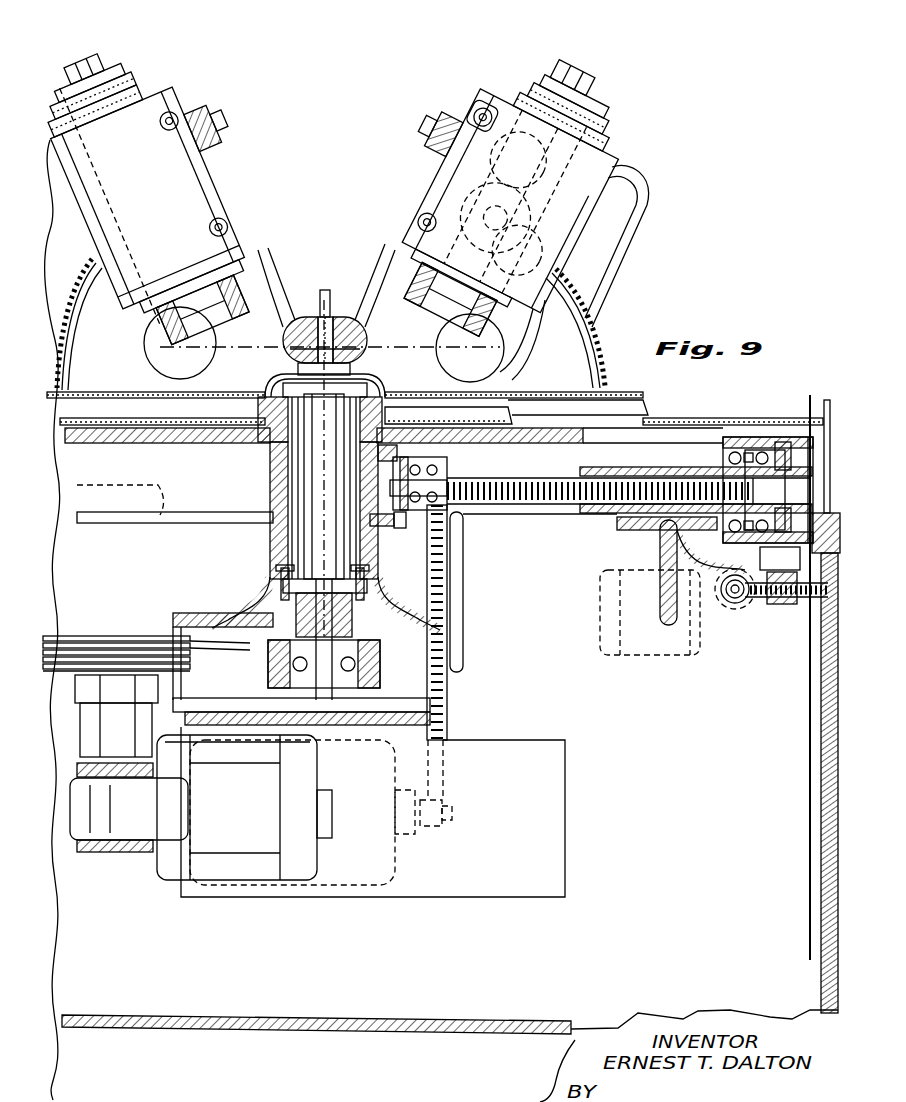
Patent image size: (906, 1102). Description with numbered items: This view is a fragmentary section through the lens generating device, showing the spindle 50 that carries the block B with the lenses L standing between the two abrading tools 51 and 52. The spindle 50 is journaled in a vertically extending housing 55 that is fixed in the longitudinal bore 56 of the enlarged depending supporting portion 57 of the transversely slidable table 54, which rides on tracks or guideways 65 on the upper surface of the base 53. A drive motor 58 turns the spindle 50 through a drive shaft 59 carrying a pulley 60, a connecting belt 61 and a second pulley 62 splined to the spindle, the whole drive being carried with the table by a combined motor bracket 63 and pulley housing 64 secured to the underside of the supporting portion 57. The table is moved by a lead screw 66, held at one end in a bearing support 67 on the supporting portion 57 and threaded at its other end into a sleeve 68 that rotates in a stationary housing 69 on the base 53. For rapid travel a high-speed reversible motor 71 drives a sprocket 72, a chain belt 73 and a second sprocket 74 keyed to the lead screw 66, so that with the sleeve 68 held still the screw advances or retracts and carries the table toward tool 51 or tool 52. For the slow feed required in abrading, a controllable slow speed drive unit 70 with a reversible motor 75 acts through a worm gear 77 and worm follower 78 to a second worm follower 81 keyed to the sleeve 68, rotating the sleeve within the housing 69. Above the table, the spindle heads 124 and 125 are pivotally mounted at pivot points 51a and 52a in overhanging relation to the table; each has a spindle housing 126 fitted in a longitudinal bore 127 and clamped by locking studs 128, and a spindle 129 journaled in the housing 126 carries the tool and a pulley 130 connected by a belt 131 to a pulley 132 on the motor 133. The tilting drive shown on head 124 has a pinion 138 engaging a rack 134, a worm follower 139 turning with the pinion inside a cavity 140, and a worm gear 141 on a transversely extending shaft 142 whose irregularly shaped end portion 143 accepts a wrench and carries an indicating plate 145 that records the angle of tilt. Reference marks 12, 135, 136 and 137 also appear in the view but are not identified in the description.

The housing side wall 12 is at (798, 383).
The spindle 50 is at (352, 380).
The abrading tool 51 is at (416, 293).
The pivot point 51a is at (458, 370).
The abrading tool 52 is at (232, 302).
The pivot point 52a is at (186, 370).
The base 53 is at (418, 1037).
The table 54 is at (185, 446).
The housing 55 is at (318, 470).
The longitudinal bore 56 is at (293, 500).
The supporting portion 57 is at (268, 520).
The drive motor 58 is at (242, 880).
The drive shaft 59 is at (112, 778).
The pulley 60 is at (118, 638).
The connecting belt 61 is at (220, 613).
The second pulley 62 is at (268, 665).
The motor bracket 63 is at (412, 897).
The pulley housing 64 is at (276, 578).
The guideways 65 is at (158, 525).
The lead screw 66 is at (535, 512).
The bearing support 67 is at (398, 528).
The sleeve 68 is at (723, 440).
The stationary housing 69 is at (723, 446).
The slow speed drive unit 70 is at (752, 610).
The high-speed reversible motor 71 is at (358, 900).
The sprocket 72 is at (448, 828).
The chain belt 73 is at (450, 722).
The second sprocket 74 is at (447, 470).
The reversible motor 75 is at (655, 655).
The worm gear 77 is at (736, 605).
The worm follower 78 is at (792, 604).
The second worm follower 81 is at (783, 442).
The spindle head 124 is at (575, 247).
The spindle head 125 is at (230, 190).
The spindle housing 126 is at (258, 262).
The longitudinal bore 127 is at (190, 208).
The locking studs 128 is at (158, 132).
The spindle 129 is at (494, 100).
The pulley 130 is at (112, 72).
The belt 131 is at (130, 80).
The pulley 132 is at (615, 125).
The motor 133 is at (645, 200).
The rack 134 is at (597, 302).
The left gear sector 135 is at (92, 298).
The pedestal hub 136 is at (334, 288).
The pivot pin 137 is at (318, 292).
The pinion 138 is at (525, 290).
The worm follower 139 is at (462, 200).
The cavity 140 is at (590, 168).
The worm gear 141 is at (497, 205).
The transversely extending shaft 142 is at (565, 235).
The end portion 143 is at (220, 130).
The indicating plate 145 is at (205, 118).
The block B is at (352, 315).
The lenses L is at (283, 345).